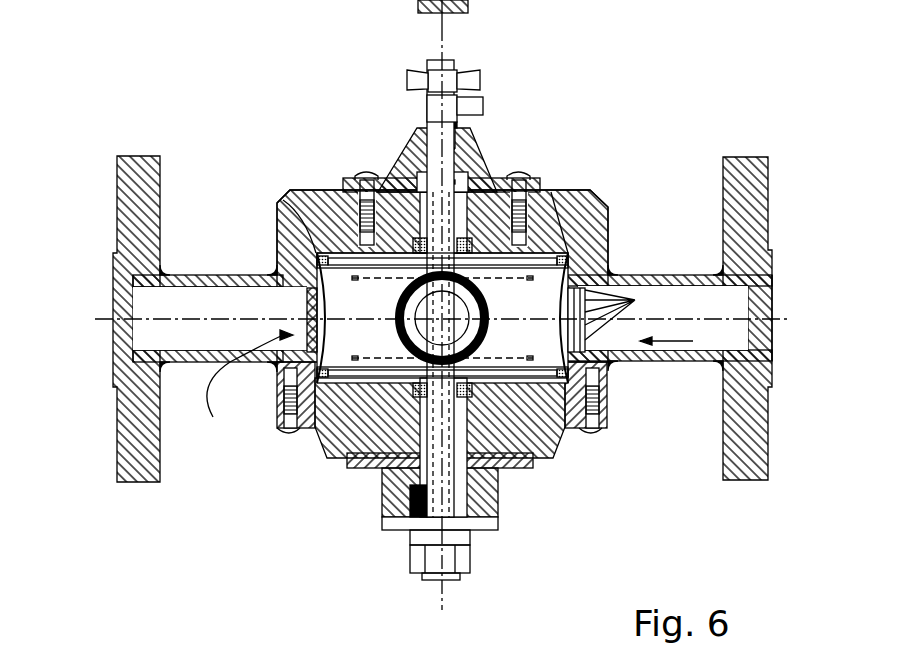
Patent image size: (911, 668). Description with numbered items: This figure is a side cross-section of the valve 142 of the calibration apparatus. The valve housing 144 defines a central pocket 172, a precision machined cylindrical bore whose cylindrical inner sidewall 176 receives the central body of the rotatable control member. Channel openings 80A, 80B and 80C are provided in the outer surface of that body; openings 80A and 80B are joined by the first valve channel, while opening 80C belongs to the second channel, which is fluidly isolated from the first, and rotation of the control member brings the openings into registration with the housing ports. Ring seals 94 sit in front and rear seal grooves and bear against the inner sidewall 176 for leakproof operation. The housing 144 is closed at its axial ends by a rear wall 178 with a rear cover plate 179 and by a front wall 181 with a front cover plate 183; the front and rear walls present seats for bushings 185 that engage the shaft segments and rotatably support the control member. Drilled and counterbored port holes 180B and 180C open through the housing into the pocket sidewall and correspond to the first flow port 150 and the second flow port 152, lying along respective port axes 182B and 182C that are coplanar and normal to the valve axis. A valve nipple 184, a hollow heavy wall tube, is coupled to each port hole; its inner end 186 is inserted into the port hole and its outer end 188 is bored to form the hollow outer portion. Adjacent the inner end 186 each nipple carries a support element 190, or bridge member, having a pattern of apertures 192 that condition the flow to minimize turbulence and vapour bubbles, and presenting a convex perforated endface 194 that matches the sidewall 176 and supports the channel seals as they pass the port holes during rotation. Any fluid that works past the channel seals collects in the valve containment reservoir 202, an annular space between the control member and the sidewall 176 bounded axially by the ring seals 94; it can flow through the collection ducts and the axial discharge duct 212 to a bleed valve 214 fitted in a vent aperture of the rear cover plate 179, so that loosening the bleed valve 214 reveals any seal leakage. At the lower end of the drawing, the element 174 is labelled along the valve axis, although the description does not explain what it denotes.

The valve 142 is at (628, 70).
The first flow port 150 is at (88, 212).
The second flow port 152 is at (815, 200).
The bleed valve 214 is at (475, 77).
The rear cover plate 179 is at (470, 140).
The discharge duct 212 is at (483, 163).
The rear wall 178 is at (537, 253).
The valve housing 144 is at (593, 190).
The bushings 185 is at (393, 175).
The ring seal 94 is at (327, 253).
The central pocket 172 is at (308, 190).
The valve containment reservoir 202 is at (277, 200).
The port hole 180B is at (290, 267).
The port hole 180C is at (597, 268).
The outer end 188 is at (165, 317).
The inner end 186 is at (323, 316).
The port axis 182B is at (102, 318).
The support element 190 is at (464, 379).
The apertures 192 is at (614, 320).
The valve nipple 184 is at (648, 362).
The port axis 182C is at (777, 318).
The channel opening 80A is at (468, 328).
The channel opening 80B is at (325, 317).
The channel opening 80C is at (565, 308).
The inner sidewall 176 is at (298, 432).
The front wall 181 is at (303, 450).
The front cover plate 183 is at (333, 455).
The perforated endface 194 is at (533, 372).
The stem nut 174 is at (440, 594).